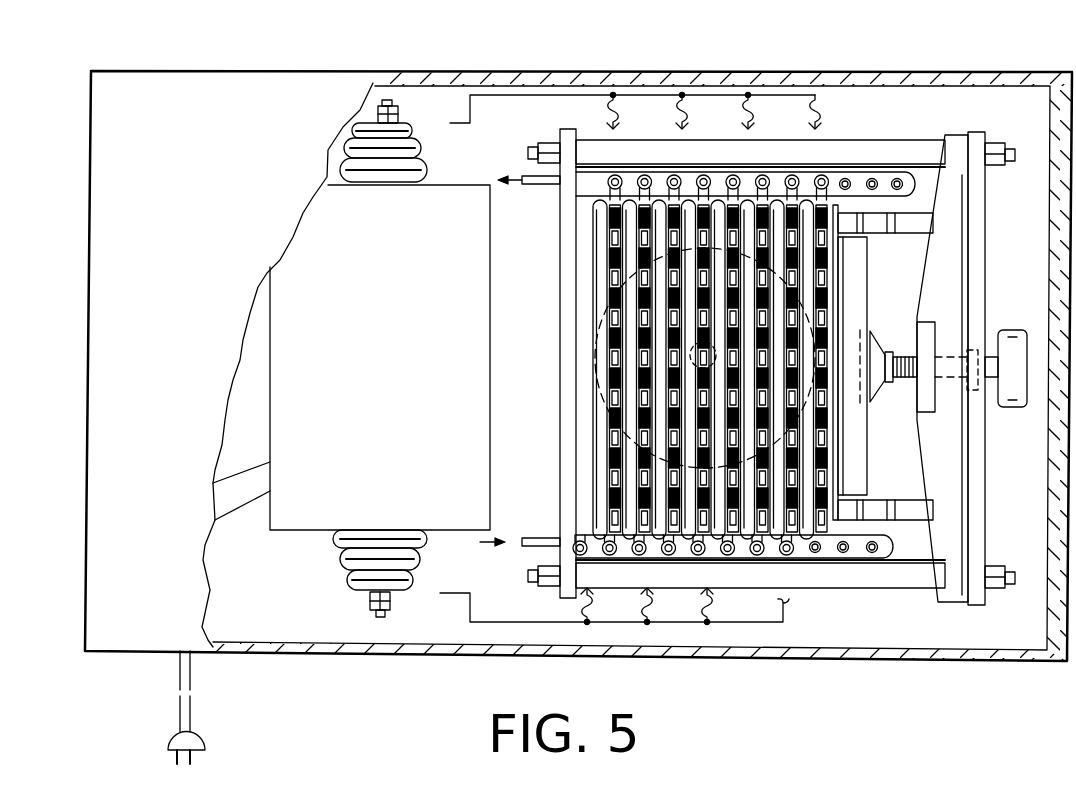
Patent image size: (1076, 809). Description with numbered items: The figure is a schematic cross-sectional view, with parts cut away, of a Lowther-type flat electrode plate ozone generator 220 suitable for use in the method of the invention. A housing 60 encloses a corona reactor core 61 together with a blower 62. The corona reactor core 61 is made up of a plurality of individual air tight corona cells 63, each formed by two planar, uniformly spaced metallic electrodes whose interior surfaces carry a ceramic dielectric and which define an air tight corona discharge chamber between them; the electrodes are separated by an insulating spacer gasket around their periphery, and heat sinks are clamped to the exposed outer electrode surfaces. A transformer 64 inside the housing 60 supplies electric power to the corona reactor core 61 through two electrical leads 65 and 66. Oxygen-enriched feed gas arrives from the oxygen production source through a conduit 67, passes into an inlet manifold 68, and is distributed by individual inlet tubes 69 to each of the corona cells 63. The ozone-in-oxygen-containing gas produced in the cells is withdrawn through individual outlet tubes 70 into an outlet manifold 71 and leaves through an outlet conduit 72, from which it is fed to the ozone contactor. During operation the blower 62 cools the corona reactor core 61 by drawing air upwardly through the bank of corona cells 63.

The ozone generator 220 is at (229, 66).
The housing 60 is at (91, 174).
The corona reactor core 61 is at (874, 133).
The blower 62 is at (603, 442).
The corona cells 63 is at (651, 200).
The transformer 64 is at (270, 362).
The electrical lead 65 is at (448, 595).
The electrical lead 66 is at (451, 123).
The conduit 67 is at (522, 546).
The inlet manifold 68 is at (595, 548).
The inlet tubes 69 is at (740, 550).
The outlet tubes 70 is at (748, 198).
The outlet manifold 71 is at (588, 186).
The outlet conduit 72 is at (530, 184).